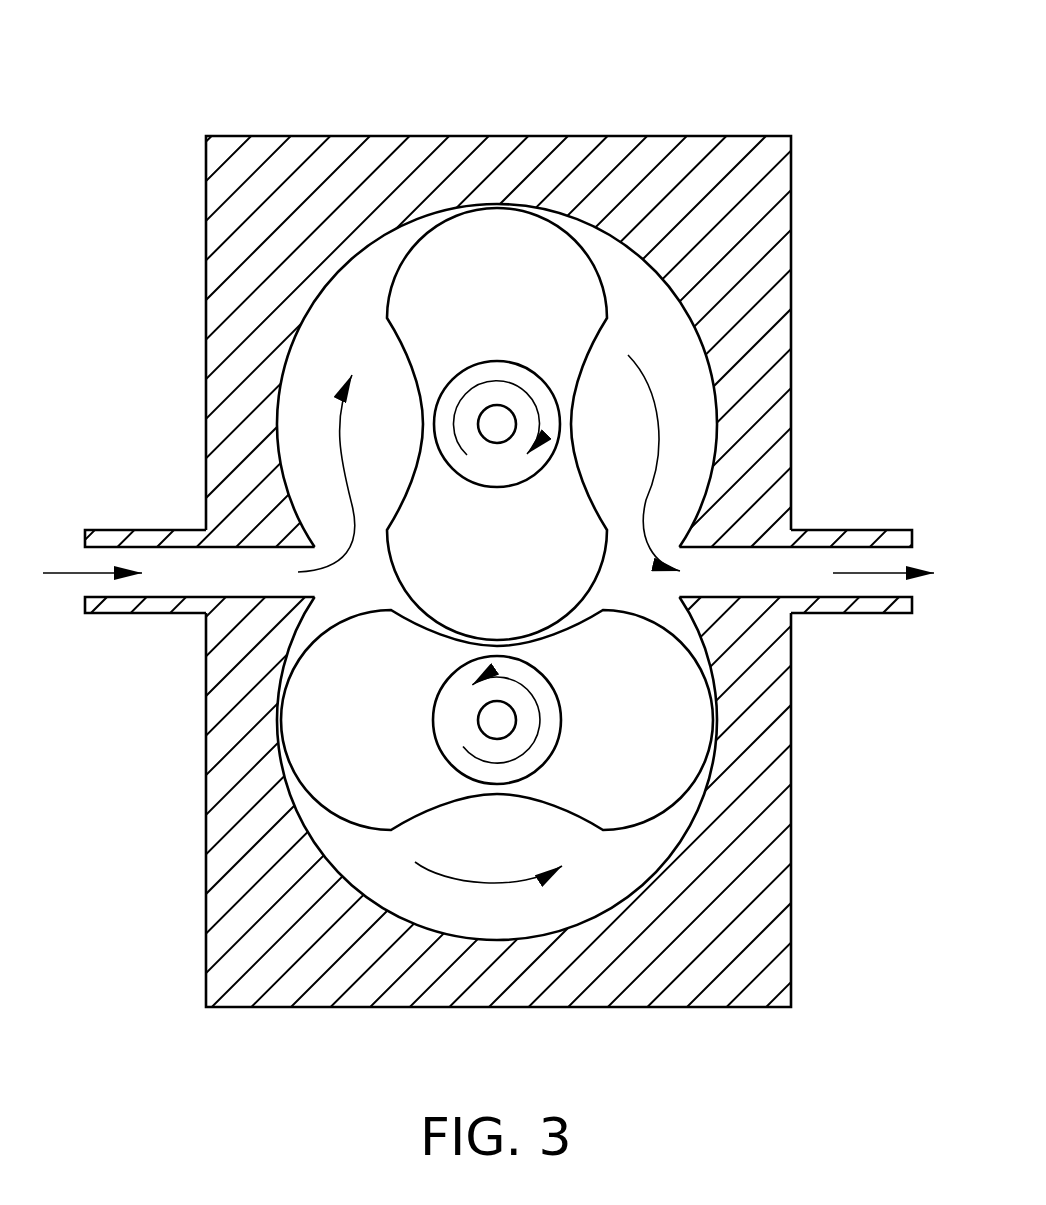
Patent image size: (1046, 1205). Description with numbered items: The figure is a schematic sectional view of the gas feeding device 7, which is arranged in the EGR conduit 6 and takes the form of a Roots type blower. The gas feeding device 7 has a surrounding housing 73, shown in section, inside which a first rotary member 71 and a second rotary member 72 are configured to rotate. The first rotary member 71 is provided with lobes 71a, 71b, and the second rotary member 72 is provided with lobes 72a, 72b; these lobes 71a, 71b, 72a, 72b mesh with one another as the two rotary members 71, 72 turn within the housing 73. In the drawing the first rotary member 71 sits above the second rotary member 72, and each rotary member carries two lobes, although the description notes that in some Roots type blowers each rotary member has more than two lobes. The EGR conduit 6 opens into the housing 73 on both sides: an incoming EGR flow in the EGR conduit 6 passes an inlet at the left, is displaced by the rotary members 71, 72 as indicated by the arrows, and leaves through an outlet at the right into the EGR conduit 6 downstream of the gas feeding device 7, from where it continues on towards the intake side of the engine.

The gas feeding device 7 is at (784, 72).
The housing 73 is at (355, 137).
The EGR conduit 6 is at (84, 573).
The first rotary member 71 is at (497, 425).
The lobe 71a is at (503, 259).
The lobe 71b is at (495, 593).
The second rotary member 72 is at (500, 720).
The lobe 72a is at (330, 722).
The lobe 72b is at (665, 722).